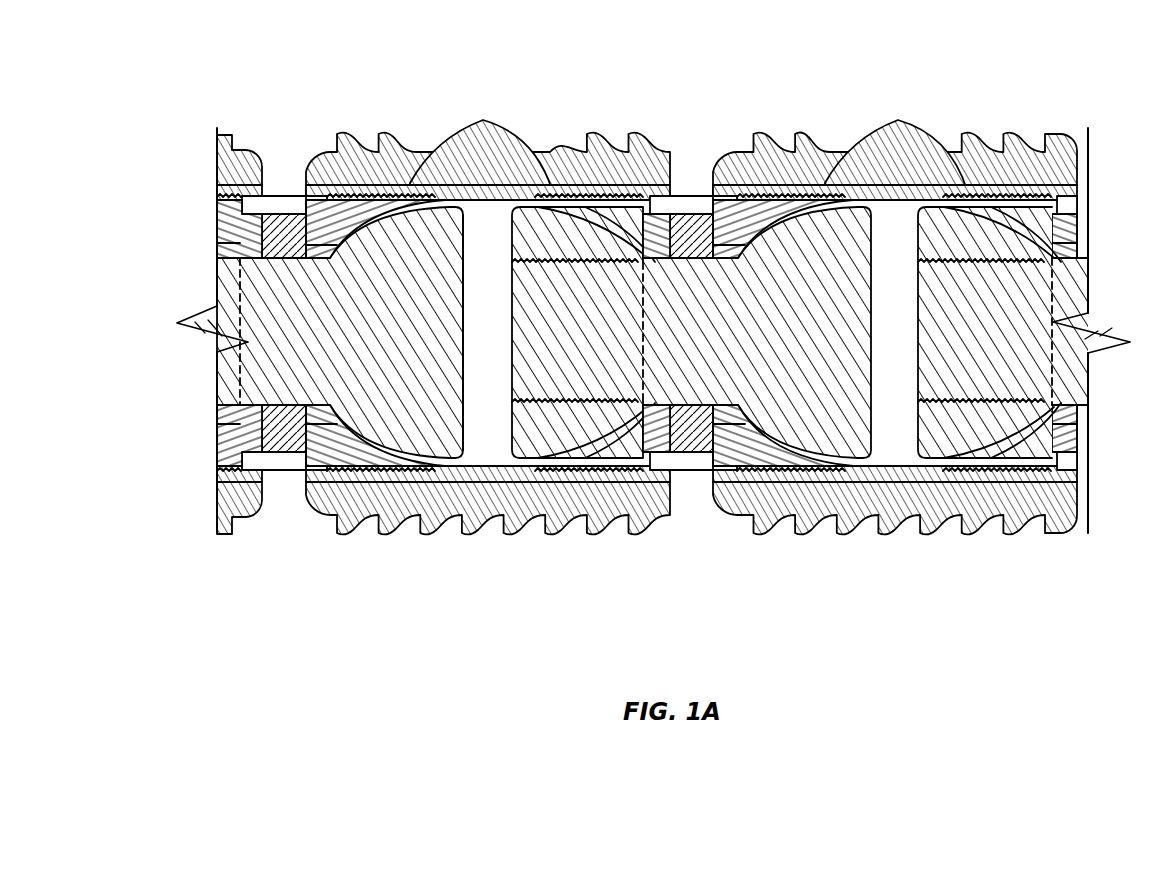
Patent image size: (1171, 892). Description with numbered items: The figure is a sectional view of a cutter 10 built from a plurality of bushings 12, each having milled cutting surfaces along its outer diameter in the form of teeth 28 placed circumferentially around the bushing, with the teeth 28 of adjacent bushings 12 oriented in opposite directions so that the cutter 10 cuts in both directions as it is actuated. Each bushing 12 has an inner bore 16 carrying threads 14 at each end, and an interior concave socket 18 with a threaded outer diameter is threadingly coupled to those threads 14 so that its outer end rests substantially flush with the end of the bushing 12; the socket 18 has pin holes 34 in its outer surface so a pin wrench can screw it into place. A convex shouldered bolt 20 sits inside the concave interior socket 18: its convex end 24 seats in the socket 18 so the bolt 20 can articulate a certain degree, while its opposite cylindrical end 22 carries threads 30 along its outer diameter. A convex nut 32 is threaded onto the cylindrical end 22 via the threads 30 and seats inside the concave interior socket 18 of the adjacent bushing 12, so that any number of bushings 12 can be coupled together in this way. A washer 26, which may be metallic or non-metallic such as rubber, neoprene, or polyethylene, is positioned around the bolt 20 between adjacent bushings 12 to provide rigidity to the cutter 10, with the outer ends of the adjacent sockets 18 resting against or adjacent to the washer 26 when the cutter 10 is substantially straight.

The cutter 10 is at (663, 321).
The bushing 12 is at (320, 150).
The threads 14 is at (472, 113).
The inner bore 16 is at (503, 466).
The concave interior socket 18 is at (1080, 230).
The convex shouldered bolt 20 is at (1077, 303).
The cylindrical end 22 is at (503, 320).
The convex end 24 is at (918, 242).
The washer 26 is at (286, 458).
The teeth 28 is at (390, 138).
The threads 30 is at (517, 276).
The convex nut 32 is at (547, 464).
The pin holes 34 is at (265, 207).